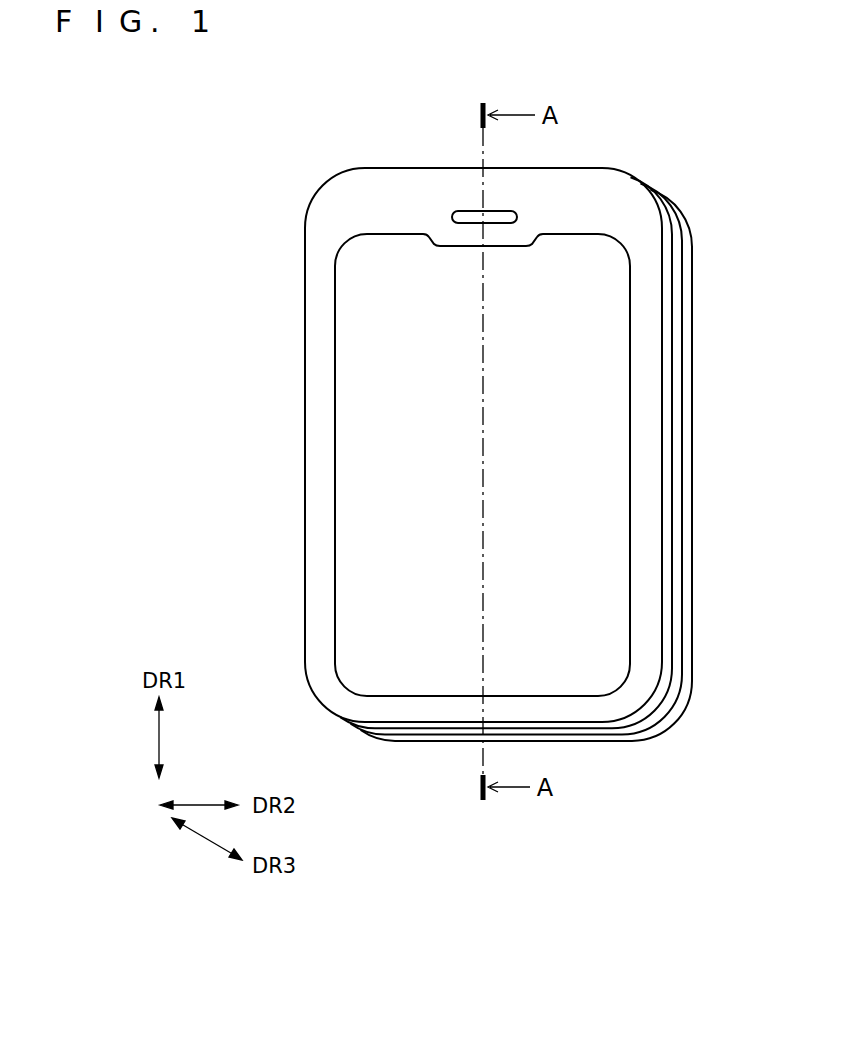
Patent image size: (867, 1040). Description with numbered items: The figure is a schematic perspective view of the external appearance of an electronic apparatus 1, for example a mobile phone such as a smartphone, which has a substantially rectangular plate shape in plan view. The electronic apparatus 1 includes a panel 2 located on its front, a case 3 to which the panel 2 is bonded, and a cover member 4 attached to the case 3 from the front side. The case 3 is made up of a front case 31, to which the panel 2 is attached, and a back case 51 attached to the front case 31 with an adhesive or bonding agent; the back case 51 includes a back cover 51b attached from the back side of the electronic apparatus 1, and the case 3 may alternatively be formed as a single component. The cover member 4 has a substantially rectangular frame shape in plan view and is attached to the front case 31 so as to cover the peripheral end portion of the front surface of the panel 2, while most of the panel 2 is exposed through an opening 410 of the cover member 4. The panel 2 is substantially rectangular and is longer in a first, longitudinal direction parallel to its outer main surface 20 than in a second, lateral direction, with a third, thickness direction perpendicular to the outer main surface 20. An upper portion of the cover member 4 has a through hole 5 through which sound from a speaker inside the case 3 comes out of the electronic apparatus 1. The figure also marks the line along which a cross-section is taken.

The electronic apparatus 1 is at (675, 175).
The panel 2 is at (353, 365).
The case 3 is at (751, 332).
The cover member 4 is at (599, 180).
The through hole 5 is at (460, 210).
The outer main surface 20 is at (377, 475).
The front case 31 is at (678, 348).
The back case 51 is at (688, 380).
The back cover 51b is at (688, 477).
The opening 410 is at (342, 541).